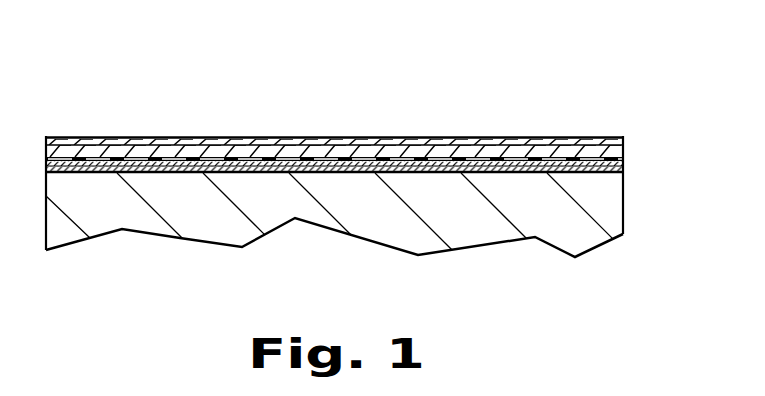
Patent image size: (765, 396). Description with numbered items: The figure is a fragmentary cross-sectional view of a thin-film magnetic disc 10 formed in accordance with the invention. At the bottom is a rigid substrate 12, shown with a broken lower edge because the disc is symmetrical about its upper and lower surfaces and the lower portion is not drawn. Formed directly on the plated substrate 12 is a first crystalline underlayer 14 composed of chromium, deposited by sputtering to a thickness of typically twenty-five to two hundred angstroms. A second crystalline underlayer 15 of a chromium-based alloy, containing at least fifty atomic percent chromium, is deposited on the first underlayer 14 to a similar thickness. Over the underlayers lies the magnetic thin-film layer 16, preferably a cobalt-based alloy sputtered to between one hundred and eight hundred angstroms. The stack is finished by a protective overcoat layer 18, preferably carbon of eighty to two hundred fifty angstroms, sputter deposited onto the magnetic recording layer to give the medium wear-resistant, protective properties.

The thin-film magnetic disc 10 is at (522, 87).
The rigid substrate 12 is at (455, 239).
The first crystalline underlayer 14 is at (625, 173).
The second crystalline underlayer 15 is at (624, 162).
The magnetic thin-film layer 16 is at (621, 154).
The protective overcoat layer 18 is at (620, 137).